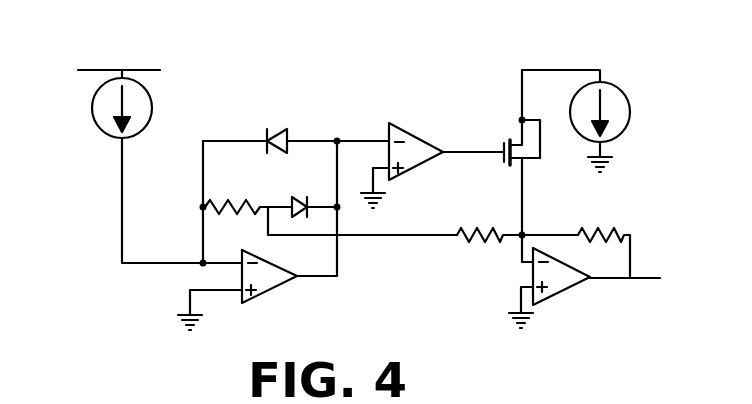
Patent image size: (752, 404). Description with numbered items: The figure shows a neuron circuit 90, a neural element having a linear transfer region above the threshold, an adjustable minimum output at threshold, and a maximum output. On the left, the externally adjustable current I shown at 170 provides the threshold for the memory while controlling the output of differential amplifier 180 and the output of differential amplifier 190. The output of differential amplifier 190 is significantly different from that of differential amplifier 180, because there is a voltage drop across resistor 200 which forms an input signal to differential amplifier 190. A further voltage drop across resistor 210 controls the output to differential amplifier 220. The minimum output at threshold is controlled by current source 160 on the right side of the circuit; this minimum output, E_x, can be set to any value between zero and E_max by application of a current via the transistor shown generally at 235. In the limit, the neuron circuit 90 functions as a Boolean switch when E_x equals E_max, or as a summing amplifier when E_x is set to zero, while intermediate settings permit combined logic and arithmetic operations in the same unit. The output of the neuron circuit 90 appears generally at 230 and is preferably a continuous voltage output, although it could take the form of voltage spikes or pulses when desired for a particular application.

The neuron circuit 90 is at (203, 72).
The current I 170 is at (95, 99).
The resistor 200 is at (201, 206).
The differential amplifier 180 is at (272, 284).
The differential amplifier 190 is at (408, 133).
The transistor 235 is at (540, 158).
The current source 160 is at (613, 88).
The resistor 210 is at (457, 233).
The output 230 is at (631, 276).
The differential amplifier 220 is at (557, 293).